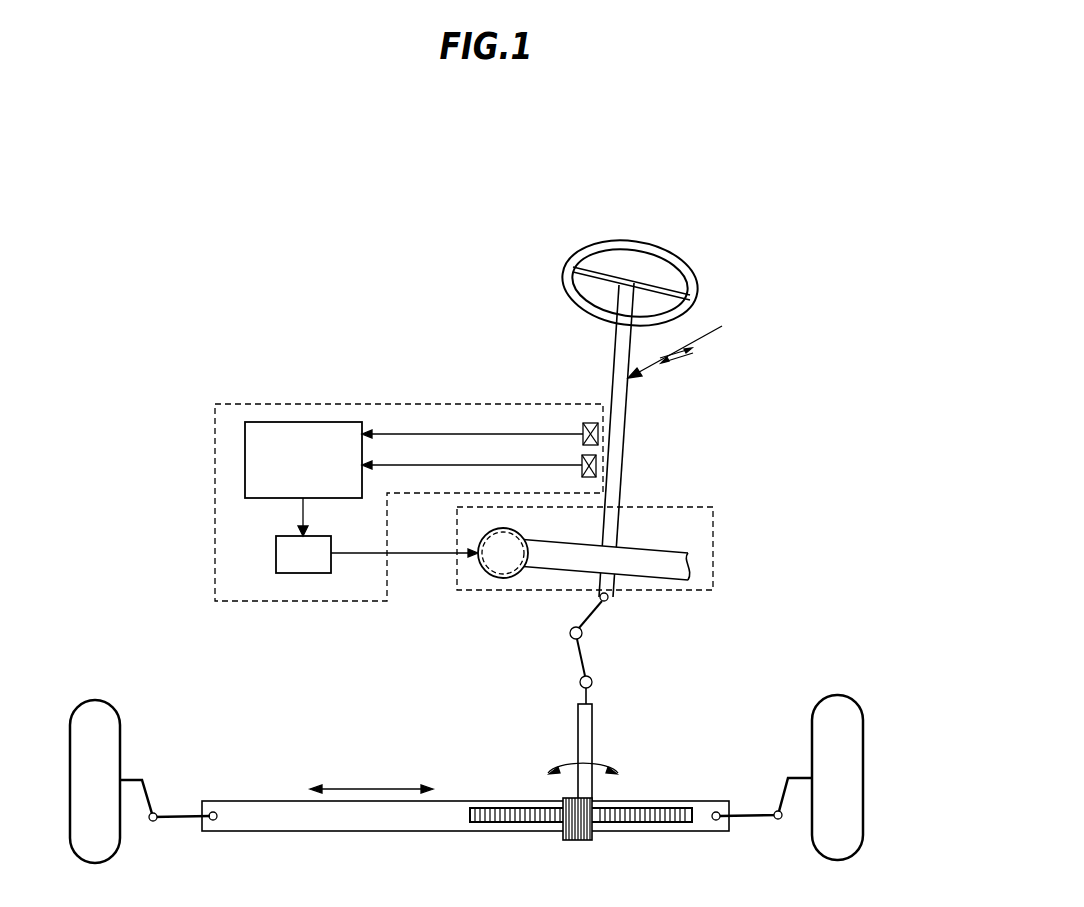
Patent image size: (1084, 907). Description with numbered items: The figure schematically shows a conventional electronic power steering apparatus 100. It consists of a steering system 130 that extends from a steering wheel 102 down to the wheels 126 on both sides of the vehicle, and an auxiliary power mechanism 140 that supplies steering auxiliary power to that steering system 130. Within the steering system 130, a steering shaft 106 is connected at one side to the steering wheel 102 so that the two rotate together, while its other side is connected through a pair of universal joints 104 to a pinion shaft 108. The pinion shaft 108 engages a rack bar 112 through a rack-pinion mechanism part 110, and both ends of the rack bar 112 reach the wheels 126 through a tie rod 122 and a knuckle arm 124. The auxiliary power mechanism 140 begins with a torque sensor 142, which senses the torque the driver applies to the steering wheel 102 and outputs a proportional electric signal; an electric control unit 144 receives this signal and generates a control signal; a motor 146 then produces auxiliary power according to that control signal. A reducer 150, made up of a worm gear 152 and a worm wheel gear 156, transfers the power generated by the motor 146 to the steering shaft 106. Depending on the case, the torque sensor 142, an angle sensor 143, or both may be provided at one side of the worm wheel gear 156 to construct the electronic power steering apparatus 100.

The electronic power steering apparatus 100 is at (226, 178).
The steering wheel 102 is at (562, 268).
The universal joints 104 is at (590, 620).
The steering shaft 106 is at (625, 392).
The pinion shaft 108 is at (578, 735).
The rack-pinion mechanism part 110 is at (612, 830).
The rack bar 112 is at (286, 810).
The right tie rod 122 is at (760, 810).
The knuckle arm 124 is at (135, 777).
The wheels 126 is at (847, 705).
The steering system 130 is at (694, 344).
The auxiliary power mechanism 140 is at (215, 450).
The torque sensor 142 is at (582, 458).
The angle sensor 143 is at (586, 424).
The electric control unit 144 is at (270, 435).
The motor 146 is at (276, 553).
The reducer 150 is at (618, 546).
The worm gear 152 is at (500, 565).
The worm wheel gear 156 is at (620, 547).